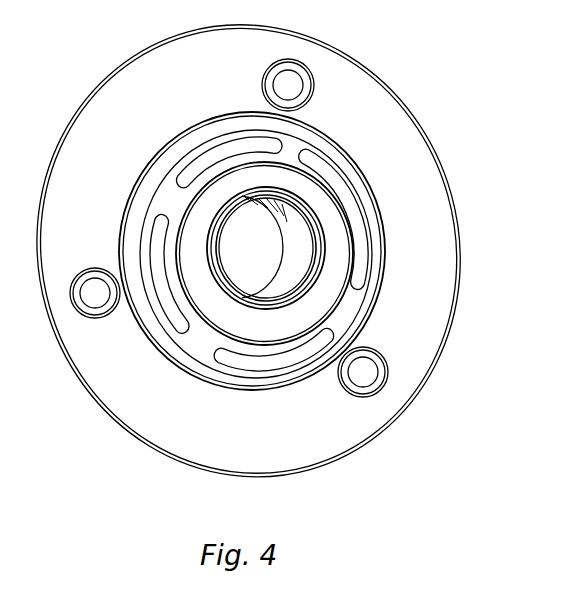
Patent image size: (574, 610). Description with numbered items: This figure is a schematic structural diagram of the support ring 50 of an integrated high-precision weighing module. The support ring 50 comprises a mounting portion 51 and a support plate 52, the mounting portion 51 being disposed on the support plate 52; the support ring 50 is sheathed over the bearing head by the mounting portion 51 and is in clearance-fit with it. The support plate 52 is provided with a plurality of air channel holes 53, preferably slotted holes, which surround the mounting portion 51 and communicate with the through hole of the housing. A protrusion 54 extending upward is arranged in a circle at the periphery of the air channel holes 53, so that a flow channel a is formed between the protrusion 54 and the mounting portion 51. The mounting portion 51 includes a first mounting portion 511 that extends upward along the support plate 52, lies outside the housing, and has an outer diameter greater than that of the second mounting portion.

The support ring 50 is at (263, 263).
The support plate 52 is at (410, 197).
The protrusion 54 is at (190, 133).
The air channel holes 53 is at (277, 360).
The flow channel a is at (310, 150).
The mounting portion 51 is at (366, 254).
The first mounting portion 511 is at (328, 277).